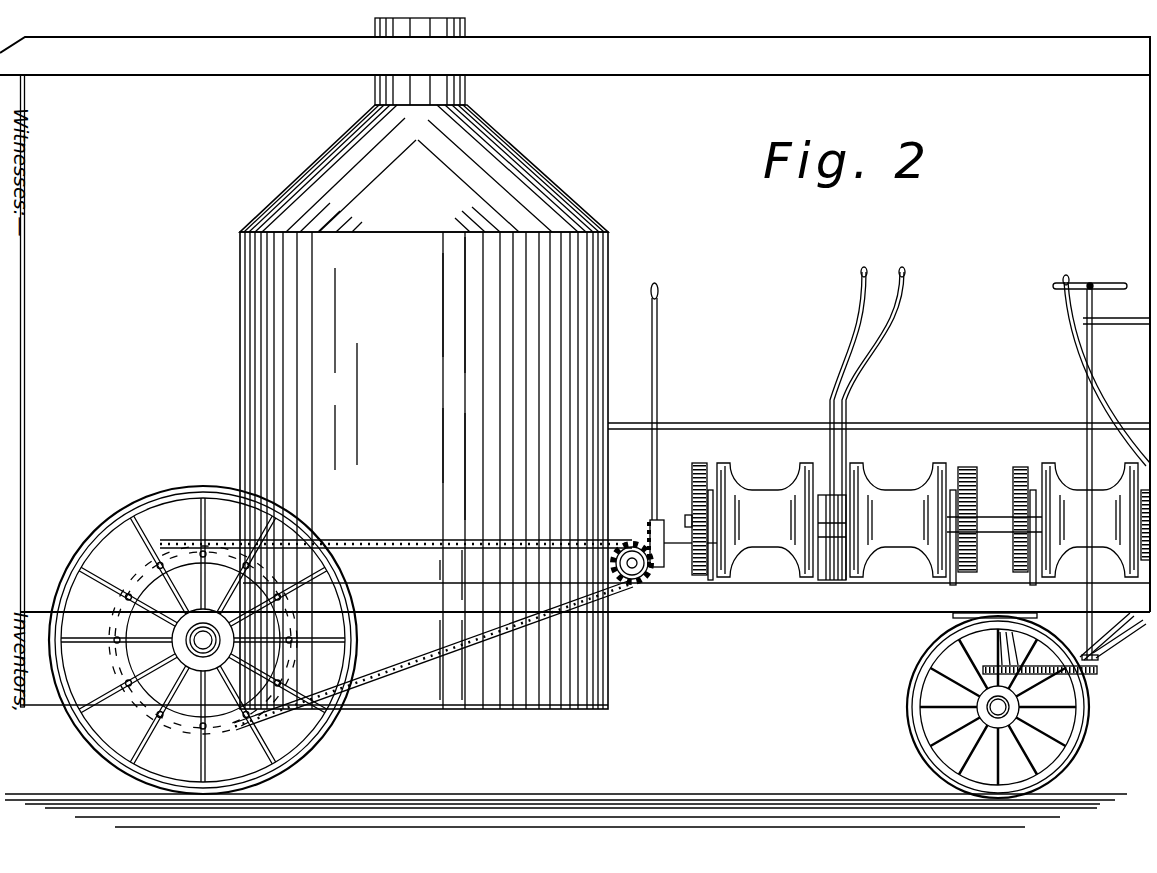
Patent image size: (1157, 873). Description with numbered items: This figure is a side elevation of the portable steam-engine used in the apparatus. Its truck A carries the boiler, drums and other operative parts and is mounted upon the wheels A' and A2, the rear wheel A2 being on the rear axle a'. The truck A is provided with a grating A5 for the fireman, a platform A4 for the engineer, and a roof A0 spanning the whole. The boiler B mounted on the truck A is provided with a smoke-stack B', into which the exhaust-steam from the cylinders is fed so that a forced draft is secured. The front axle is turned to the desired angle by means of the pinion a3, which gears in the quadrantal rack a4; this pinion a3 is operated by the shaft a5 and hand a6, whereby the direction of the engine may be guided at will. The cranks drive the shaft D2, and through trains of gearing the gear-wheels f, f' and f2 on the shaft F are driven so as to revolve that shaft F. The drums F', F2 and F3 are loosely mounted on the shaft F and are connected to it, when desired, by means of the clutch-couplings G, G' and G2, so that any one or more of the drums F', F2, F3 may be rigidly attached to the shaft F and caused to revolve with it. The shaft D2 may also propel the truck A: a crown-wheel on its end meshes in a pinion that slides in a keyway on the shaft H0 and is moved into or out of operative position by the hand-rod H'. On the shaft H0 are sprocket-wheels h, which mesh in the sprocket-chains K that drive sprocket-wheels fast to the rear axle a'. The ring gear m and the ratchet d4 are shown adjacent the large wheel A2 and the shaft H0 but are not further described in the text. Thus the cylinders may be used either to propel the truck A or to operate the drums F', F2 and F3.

The roof A0 is at (745, 63).
The smoke-stack B' is at (455, 63).
The boiler B is at (446, 407).
The truck A is at (577, 705).
The grating A5 is at (24, 708).
The platform A4 is at (955, 425).
The hand-rod H' is at (674, 401).
The wheel A2 is at (330, 736).
The rear axle a' is at (195, 666).
The ring gear m is at (183, 543).
The sprocket-chain K is at (427, 667).
The shaft H0 is at (632, 568).
The sprocket-wheel h is at (645, 585).
The ratchet d4 is at (650, 526).
The shaft F is at (685, 519).
The gear-wheel f is at (693, 551).
The drum F' is at (765, 519).
The shaft D2 is at (836, 585).
The clutch-coupling G is at (849, 410).
The clutch-coupling G' is at (879, 410).
The drum F2 is at (903, 492).
The gear-wheel f' is at (947, 540).
The gear-wheel f2 is at (1026, 583).
The drum F3 is at (1063, 490).
The shaft a5 is at (1096, 352).
The hand a6 is at (1109, 283).
The clutch-coupling G2 is at (1101, 354).
The wheel A' is at (971, 707).
The pinion a3 is at (1097, 670).
The quadrantal rack a4 is at (1050, 680).